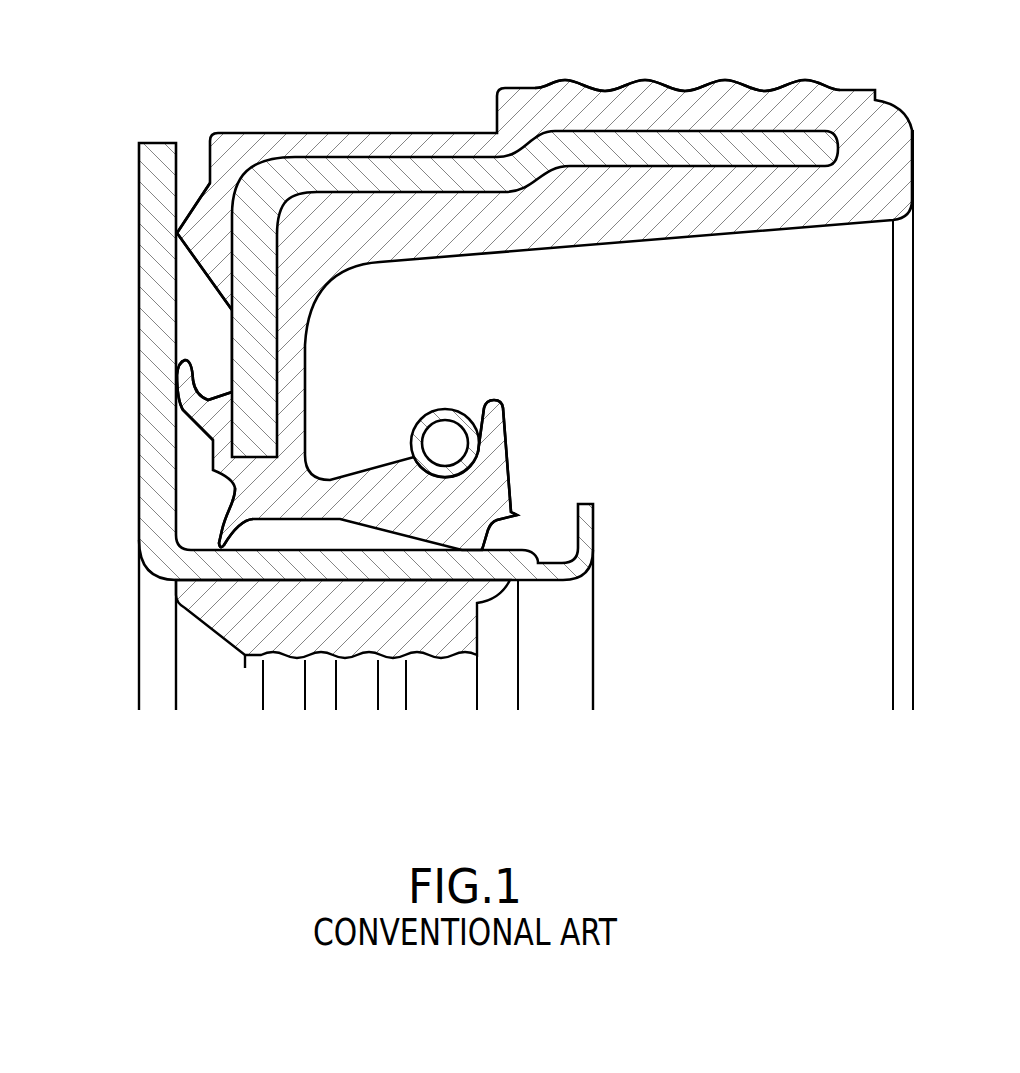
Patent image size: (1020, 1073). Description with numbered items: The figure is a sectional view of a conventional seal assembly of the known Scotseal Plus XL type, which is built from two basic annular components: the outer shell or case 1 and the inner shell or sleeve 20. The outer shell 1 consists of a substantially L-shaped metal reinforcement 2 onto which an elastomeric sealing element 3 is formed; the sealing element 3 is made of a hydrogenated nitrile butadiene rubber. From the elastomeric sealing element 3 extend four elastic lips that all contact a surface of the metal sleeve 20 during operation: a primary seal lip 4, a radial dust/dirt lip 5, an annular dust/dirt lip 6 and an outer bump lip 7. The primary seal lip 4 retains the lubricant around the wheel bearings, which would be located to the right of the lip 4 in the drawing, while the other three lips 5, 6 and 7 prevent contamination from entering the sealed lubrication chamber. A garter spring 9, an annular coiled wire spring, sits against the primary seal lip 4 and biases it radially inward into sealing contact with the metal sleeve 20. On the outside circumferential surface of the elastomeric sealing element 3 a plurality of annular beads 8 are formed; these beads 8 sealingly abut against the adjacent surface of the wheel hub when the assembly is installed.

The outer shell or case 1 is at (501, 278).
The L-shaped metal reinforcement 2 is at (487, 178).
The elastomeric sealing element 3 is at (413, 145).
The primary seal lip 4 is at (477, 530).
The radial dust/dirt lip 5 is at (228, 530).
The annular dust/dirt lip 6 is at (185, 372).
The outer bump lip 7 is at (200, 225).
The annular beads 8 is at (808, 80).
The garter spring 9 is at (445, 410).
The inner shell or sleeve 20 is at (115, 300).